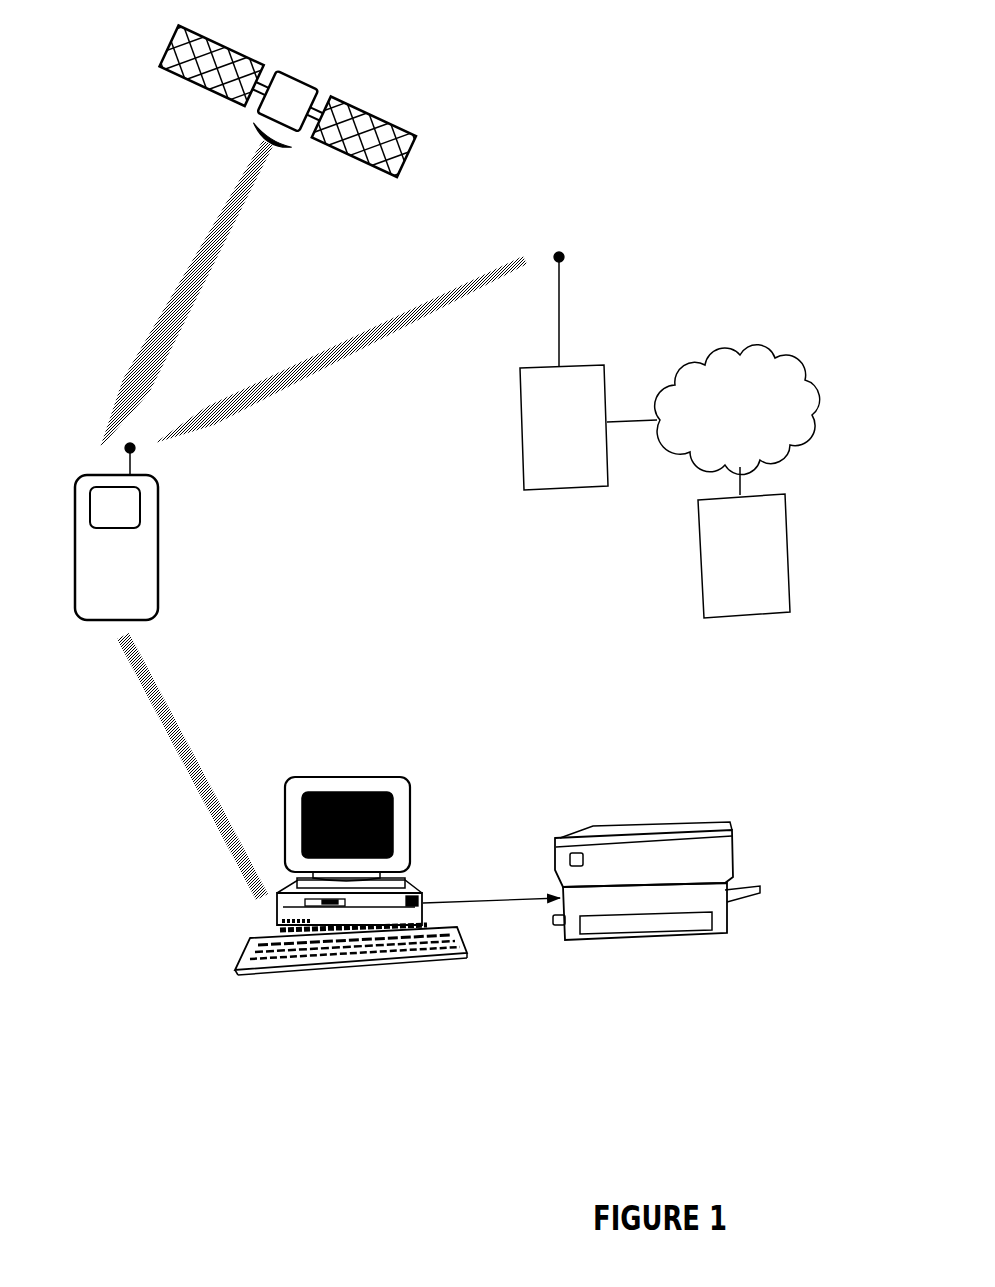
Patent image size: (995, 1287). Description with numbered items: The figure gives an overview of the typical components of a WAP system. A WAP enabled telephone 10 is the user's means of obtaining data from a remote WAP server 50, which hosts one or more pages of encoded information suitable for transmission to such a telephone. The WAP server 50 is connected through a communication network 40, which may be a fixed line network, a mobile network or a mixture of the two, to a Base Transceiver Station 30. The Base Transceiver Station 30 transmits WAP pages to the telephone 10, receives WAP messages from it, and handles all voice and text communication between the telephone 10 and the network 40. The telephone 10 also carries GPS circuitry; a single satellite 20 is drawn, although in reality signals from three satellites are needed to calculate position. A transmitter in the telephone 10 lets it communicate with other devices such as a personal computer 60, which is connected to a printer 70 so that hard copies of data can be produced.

The WAP enabled telephone 10 is at (174, 529).
The satellite 20 is at (223, 121).
The Base Transceiver Station 30 is at (508, 421).
The communication network 40 is at (665, 460).
The WAP server 50 is at (681, 593).
The personal computer 60 is at (306, 986).
The printer 70 is at (660, 813).